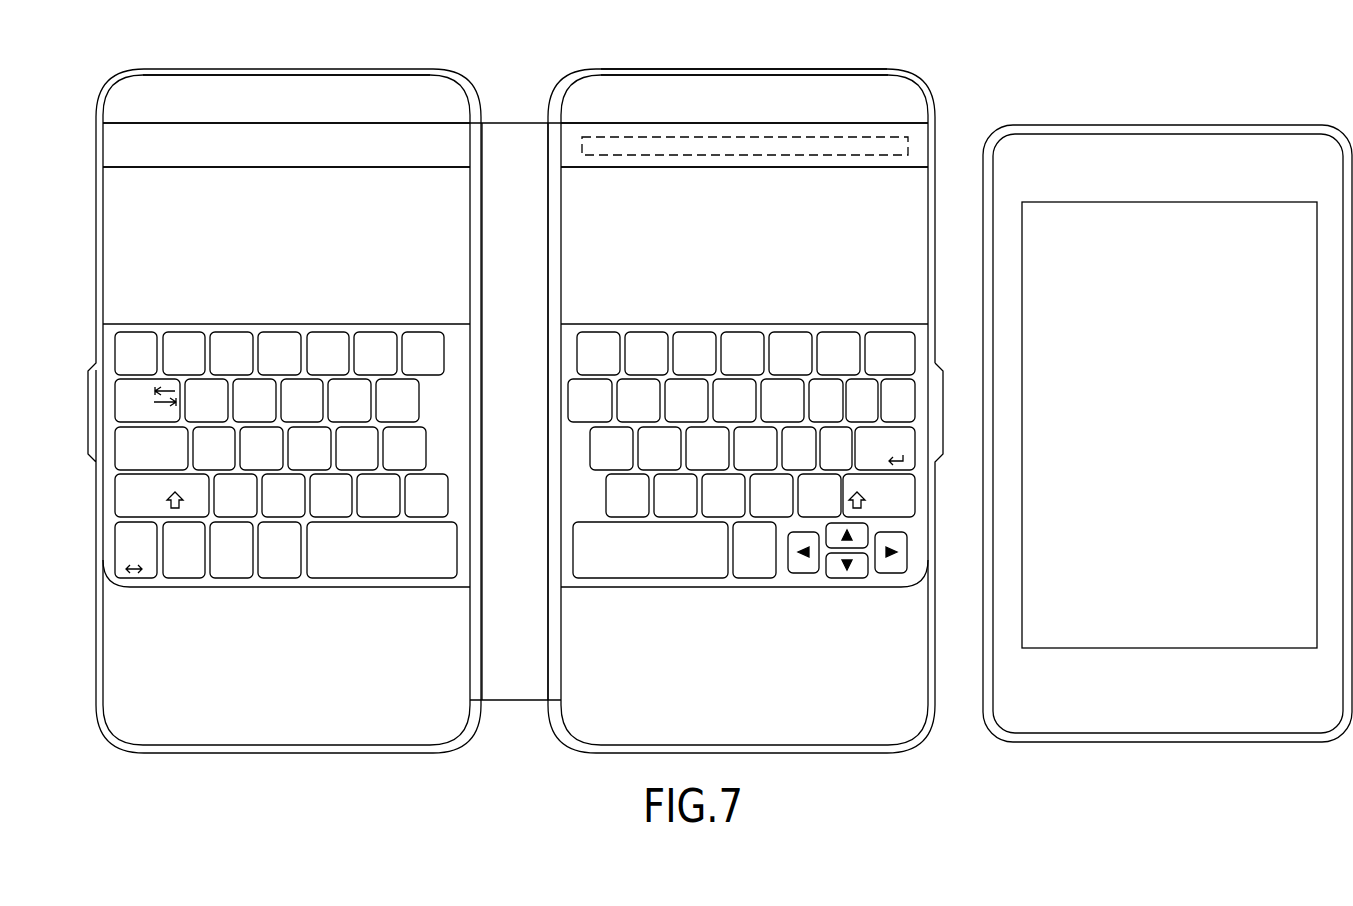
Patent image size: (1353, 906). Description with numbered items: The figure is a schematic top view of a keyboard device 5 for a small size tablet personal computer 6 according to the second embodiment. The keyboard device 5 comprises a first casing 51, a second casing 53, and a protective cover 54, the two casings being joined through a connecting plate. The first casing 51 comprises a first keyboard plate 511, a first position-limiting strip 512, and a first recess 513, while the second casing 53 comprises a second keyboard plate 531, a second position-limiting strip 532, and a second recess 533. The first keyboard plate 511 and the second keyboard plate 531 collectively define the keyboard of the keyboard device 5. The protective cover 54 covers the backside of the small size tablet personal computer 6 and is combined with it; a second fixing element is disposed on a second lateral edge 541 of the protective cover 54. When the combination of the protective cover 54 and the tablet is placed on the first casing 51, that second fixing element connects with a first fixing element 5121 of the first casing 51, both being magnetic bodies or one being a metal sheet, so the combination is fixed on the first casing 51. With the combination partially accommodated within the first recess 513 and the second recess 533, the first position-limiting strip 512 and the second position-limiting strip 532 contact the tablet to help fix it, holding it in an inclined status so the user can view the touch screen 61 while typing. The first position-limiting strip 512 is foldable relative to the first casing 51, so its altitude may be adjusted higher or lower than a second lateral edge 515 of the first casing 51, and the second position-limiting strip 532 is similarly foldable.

The keyboard device 5 is at (648, 39).
The first casing 51 is at (919, 247).
The first keyboard plate 511 is at (653, 563).
The first position-limiting strip 512 is at (918, 137).
The first fixing element 5121 is at (727, 141).
The first recess 513 is at (893, 93).
The second lateral edge 515 is at (810, 72).
The second casing 53 is at (125, 241).
The second keyboard plate 531 is at (382, 565).
The second position-limiting strip 532 is at (113, 153).
The second recess 533 is at (137, 95).
The protective cover 54 is at (1283, 120).
The second lateral edge 541 is at (1127, 122).
The small size tablet personal computer 6 is at (1167, 408).
The touch screen 61 is at (1222, 213).